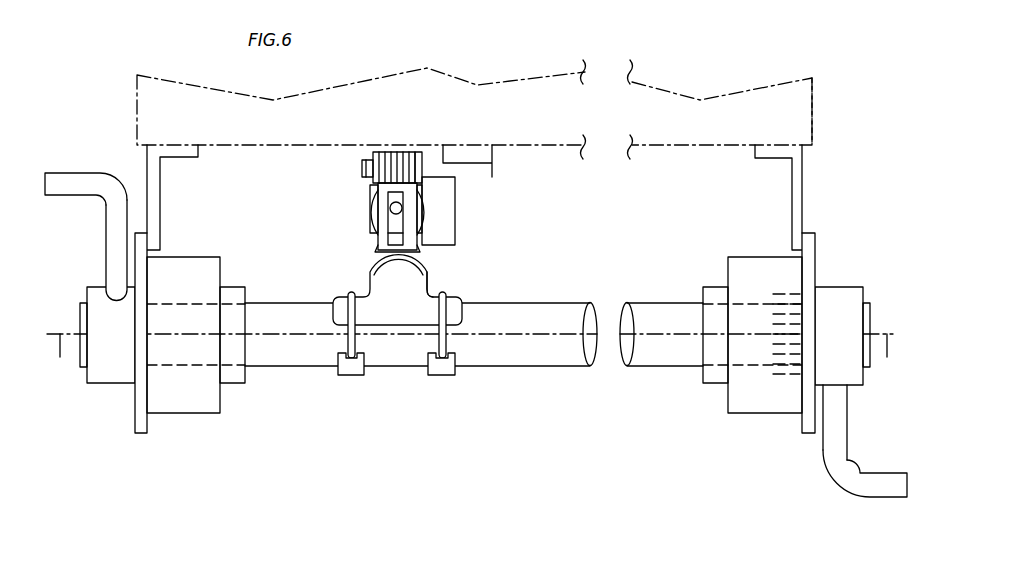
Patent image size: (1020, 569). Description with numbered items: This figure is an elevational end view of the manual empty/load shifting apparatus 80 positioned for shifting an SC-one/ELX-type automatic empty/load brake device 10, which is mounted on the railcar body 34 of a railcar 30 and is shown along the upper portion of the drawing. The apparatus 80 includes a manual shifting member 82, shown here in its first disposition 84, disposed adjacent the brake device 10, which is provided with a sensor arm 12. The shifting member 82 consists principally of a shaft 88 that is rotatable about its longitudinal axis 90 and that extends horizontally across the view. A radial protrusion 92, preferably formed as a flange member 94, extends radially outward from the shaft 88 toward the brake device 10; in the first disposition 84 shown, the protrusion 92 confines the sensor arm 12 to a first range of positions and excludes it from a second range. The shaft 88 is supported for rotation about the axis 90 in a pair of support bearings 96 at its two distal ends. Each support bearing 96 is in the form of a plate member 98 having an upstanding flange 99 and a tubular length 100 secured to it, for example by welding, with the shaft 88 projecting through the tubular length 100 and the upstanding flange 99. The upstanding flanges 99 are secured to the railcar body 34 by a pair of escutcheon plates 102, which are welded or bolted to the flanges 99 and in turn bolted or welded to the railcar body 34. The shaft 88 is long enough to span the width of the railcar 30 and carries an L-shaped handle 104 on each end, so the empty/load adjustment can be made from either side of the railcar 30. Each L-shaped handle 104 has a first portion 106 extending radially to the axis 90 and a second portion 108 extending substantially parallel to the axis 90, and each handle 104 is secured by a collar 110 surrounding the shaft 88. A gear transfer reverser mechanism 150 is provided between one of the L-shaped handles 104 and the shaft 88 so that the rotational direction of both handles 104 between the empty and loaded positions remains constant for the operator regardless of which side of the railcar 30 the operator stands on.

The automatic empty/load brake device 10 is at (374, 198).
The sensor arm 12 is at (378, 240).
The railcar 30 is at (868, 87).
The railcar body 34 is at (806, 70).
The manual empty/load shifting apparatus 80 is at (402, 378).
The manual shifting member 82 is at (328, 375).
The first disposition 84 is at (403, 322).
The shaft 88 is at (512, 368).
The longitudinal axis 90 is at (476, 358).
The radial protrusion 92 is at (435, 268).
The flange member 94 is at (380, 270).
The support bearings 96 is at (470, 340).
The plate member 98 is at (205, 407).
The upstanding flange 99 is at (133, 432).
The tubular length 100 is at (243, 288).
The escutcheon plates 102 is at (147, 162).
The L-shaped handle 104 is at (470, 315).
The first portion 106 is at (108, 262).
The second portion 108 is at (80, 192).
The collar 110 is at (97, 385).
The gear transfer reverser mechanism 150 is at (786, 276).